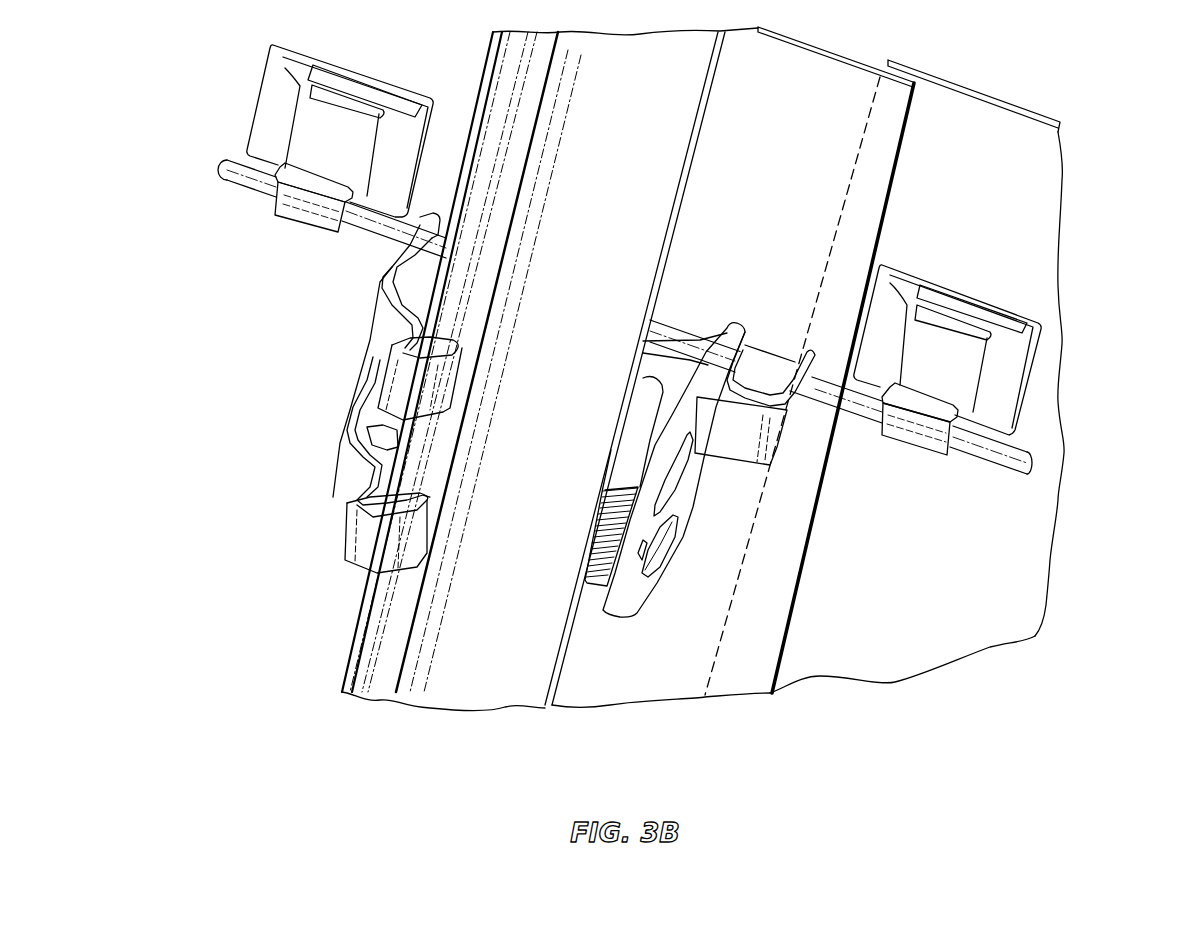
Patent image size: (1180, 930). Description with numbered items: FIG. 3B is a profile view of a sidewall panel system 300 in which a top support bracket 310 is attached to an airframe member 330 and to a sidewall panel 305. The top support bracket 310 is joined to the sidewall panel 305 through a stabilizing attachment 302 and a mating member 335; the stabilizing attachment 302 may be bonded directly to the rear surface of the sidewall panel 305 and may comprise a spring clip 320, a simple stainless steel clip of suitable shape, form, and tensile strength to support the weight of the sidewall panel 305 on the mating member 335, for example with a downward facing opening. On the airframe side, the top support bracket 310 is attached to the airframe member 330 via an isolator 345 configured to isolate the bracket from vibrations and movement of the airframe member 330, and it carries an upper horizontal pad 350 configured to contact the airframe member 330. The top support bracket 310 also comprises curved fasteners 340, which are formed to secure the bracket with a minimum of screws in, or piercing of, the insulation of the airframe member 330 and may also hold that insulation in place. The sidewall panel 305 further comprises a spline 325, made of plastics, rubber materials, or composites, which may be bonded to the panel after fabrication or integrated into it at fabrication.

The sidewall panel system 300 is at (1062, 88).
The stabilizing attachment 302 is at (272, 110).
The sidewall panel 305 is at (897, 650).
The top support bracket 310 is at (733, 433).
The spring clip 320 is at (305, 210).
The spline 325 is at (633, 673).
The airframe member 330 is at (455, 672).
The mating member 335 is at (1015, 448).
The curved fastener 340 is at (363, 545).
The isolator 345 is at (588, 600).
The upper horizontal pad 350 is at (657, 363).